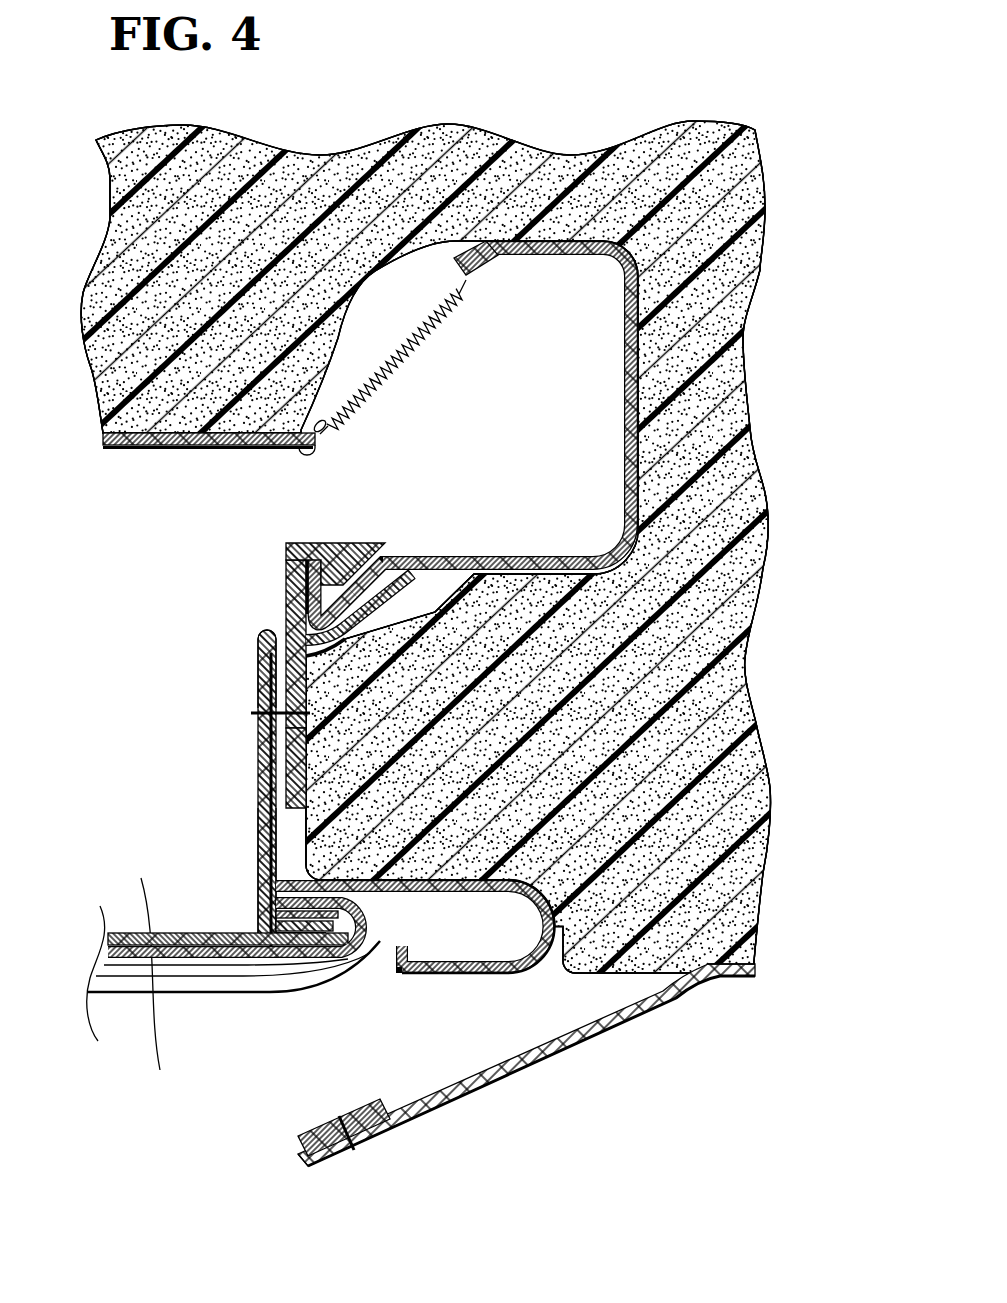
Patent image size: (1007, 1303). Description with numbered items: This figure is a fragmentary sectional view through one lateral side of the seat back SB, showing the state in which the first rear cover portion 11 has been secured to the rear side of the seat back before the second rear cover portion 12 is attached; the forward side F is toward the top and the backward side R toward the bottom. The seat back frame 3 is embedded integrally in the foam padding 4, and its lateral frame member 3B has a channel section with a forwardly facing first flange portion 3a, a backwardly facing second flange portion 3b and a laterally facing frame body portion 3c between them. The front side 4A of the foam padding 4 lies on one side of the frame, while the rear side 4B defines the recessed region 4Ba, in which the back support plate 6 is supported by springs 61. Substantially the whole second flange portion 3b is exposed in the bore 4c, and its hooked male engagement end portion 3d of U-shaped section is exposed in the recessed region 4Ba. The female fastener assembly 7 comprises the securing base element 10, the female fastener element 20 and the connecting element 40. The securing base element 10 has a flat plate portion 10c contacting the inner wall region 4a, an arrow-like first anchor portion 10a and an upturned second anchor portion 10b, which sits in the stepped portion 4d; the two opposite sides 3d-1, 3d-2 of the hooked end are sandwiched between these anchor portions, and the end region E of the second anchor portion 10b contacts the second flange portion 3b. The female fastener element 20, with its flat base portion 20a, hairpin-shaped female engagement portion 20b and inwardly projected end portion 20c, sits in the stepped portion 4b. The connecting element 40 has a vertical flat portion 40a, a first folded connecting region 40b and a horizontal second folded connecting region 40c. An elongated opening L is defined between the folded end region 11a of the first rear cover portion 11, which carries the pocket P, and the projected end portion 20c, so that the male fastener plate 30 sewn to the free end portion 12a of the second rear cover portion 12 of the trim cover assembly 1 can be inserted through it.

The trim cover assembly 1 is at (722, 972).
The seat back frame 3 is at (398, 166).
The first flange portion 3a is at (543, 247).
The second flange portion 3b is at (487, 548).
The frame body portion 3c is at (614, 443).
The hooked male engagement end portion 3d is at (303, 578).
The side of male engagement end portion 3d-1 is at (340, 540).
The side of male engagement end portion 3d-2 is at (378, 575).
The lateral frame member 3B is at (612, 328).
The foam padding 4 is at (520, 163).
The inner wall region 4a is at (296, 828).
The stepped portion 4b is at (437, 872).
The bore 4c is at (545, 567).
The stepped portion 4d is at (430, 619).
The front side of foam padding 4A is at (135, 245).
The rear side of foam padding 4B is at (720, 835).
The recessed region 4Ba is at (233, 986).
The back support plate 6 is at (135, 440).
The female fastener assembly 7 is at (203, 727).
The securing base element 10 is at (272, 545).
The first anchor portion 10a is at (320, 535).
The second anchor portion 10b is at (403, 567).
The flat plate portion 10c is at (300, 758).
The first rear cover portion 11 is at (118, 1000).
The folded end region 11a is at (364, 913).
The second rear cover portion 12 is at (467, 1082).
The free end portion 12a is at (370, 1128).
The female fastener element 20 is at (432, 968).
The flat base portion 20a is at (467, 886).
The female engagement portion 20b is at (485, 966).
The inwardly projected end portion 20c is at (390, 930).
The male fastener plate 30 is at (318, 1122).
The connecting element 40 is at (249, 797).
The vertical flat portion 40a is at (256, 838).
The first folded connecting region 40b is at (250, 684).
The second folded connecting region 40c is at (313, 950).
The springs 61 is at (388, 367).
The horizontally extending end region E is at (477, 525).
The forward side F is at (311, 89).
The backward side R is at (217, 1184).
The pocket P is at (195, 985).
The elongated opening L is at (357, 948).
The seat back SB is at (648, 1065).